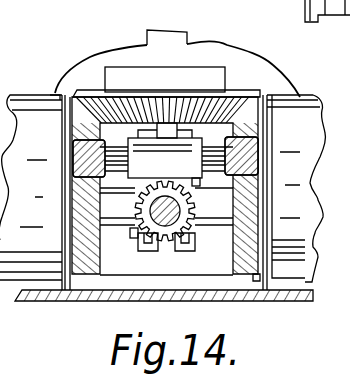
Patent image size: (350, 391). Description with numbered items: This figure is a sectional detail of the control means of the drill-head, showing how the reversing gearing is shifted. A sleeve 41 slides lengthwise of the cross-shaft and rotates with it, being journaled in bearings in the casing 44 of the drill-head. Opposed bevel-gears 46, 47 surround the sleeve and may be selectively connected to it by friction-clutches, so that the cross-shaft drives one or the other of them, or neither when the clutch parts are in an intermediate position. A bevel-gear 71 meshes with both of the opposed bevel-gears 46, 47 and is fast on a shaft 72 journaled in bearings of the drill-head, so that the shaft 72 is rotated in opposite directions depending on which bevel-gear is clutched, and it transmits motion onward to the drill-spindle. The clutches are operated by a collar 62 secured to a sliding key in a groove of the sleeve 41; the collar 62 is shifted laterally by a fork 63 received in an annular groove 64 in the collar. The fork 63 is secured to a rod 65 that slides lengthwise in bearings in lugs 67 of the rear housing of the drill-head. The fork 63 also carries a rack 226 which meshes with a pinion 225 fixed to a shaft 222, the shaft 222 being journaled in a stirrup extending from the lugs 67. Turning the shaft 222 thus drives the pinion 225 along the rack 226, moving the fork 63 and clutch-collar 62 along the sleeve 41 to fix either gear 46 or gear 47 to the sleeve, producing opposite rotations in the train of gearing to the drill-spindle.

The sleeve 41 is at (105, 242).
The casing 44 is at (245, 300).
The bevel-gear 46 is at (252, 273).
The bevel-gear 47 is at (82, 268).
The collar 62 is at (143, 256).
The fork 63 is at (146, 271).
The annular groove 64 is at (183, 253).
The rod 65 is at (117, 168).
The lugs 67 is at (82, 153).
The bevel-gear 71 is at (226, 106).
The shaft 72 is at (173, 50).
The shaft 222 is at (167, 218).
The pinion 225 is at (138, 231).
The rack 226 is at (196, 182).